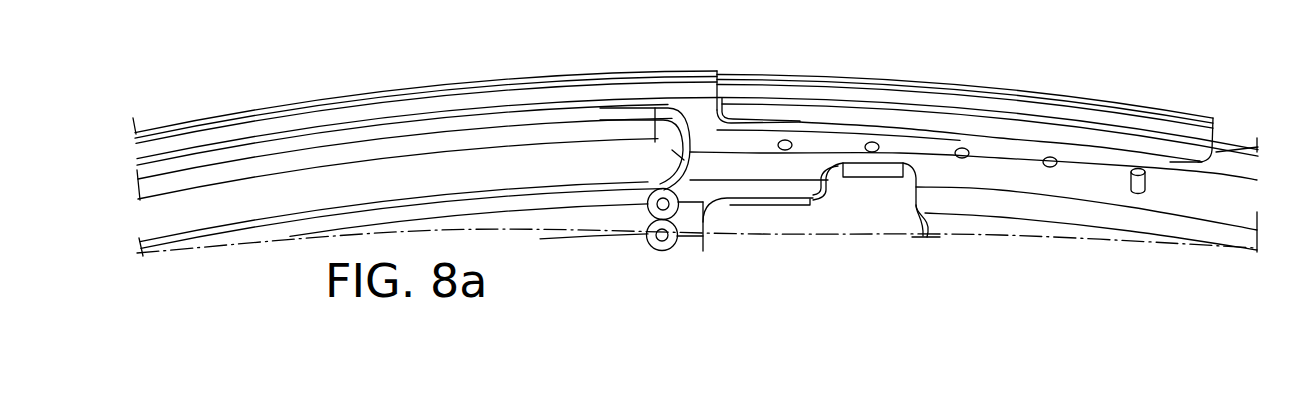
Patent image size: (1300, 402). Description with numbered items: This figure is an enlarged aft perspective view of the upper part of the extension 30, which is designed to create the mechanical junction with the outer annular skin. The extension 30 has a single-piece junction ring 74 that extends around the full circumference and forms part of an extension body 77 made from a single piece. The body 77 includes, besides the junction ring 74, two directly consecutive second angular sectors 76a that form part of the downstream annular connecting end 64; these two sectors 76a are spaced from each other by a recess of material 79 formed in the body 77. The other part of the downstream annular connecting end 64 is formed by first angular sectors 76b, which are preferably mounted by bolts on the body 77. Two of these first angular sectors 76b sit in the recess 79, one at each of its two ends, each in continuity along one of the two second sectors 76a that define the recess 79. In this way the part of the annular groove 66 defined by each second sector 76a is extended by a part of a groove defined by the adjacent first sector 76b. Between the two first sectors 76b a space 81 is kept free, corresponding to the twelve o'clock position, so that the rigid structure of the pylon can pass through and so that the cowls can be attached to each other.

The extension 30 is at (1108, 88).
The downstream annular connecting end 64 is at (331, 85).
The annular groove 66 is at (440, 107).
The junction ring 74 is at (592, 219).
The second angular sectors 76a is at (617, 104).
The first angular sectors 76b is at (910, 82).
The extension body 77 is at (221, 198).
The recess of material 79 is at (727, 107).
The space 81 is at (1223, 140).